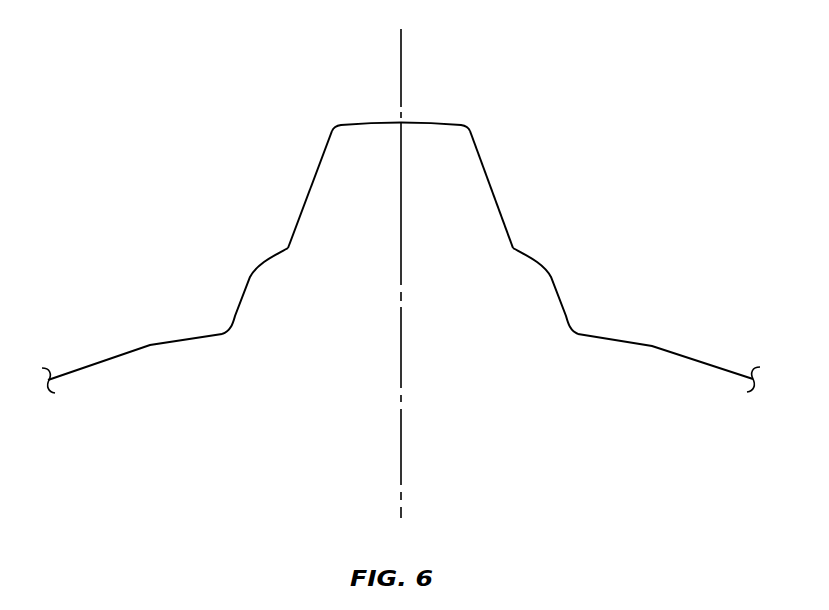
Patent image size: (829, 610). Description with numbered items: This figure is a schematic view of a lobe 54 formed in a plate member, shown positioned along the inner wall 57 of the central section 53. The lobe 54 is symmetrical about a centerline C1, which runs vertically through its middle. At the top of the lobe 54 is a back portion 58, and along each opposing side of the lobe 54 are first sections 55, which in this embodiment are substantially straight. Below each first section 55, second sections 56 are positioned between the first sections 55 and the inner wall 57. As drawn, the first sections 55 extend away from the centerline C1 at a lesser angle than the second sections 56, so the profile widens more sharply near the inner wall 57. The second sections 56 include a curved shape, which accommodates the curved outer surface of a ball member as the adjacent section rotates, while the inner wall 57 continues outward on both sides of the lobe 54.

The centerline C1 is at (401, 45).
The central section 53 is at (401, 235).
The lobe 54 is at (345, 304).
The first sections 55 is at (310, 190).
The second sections 56 is at (252, 278).
The inner wall 57 is at (148, 345).
The back portion 58 is at (420, 123).